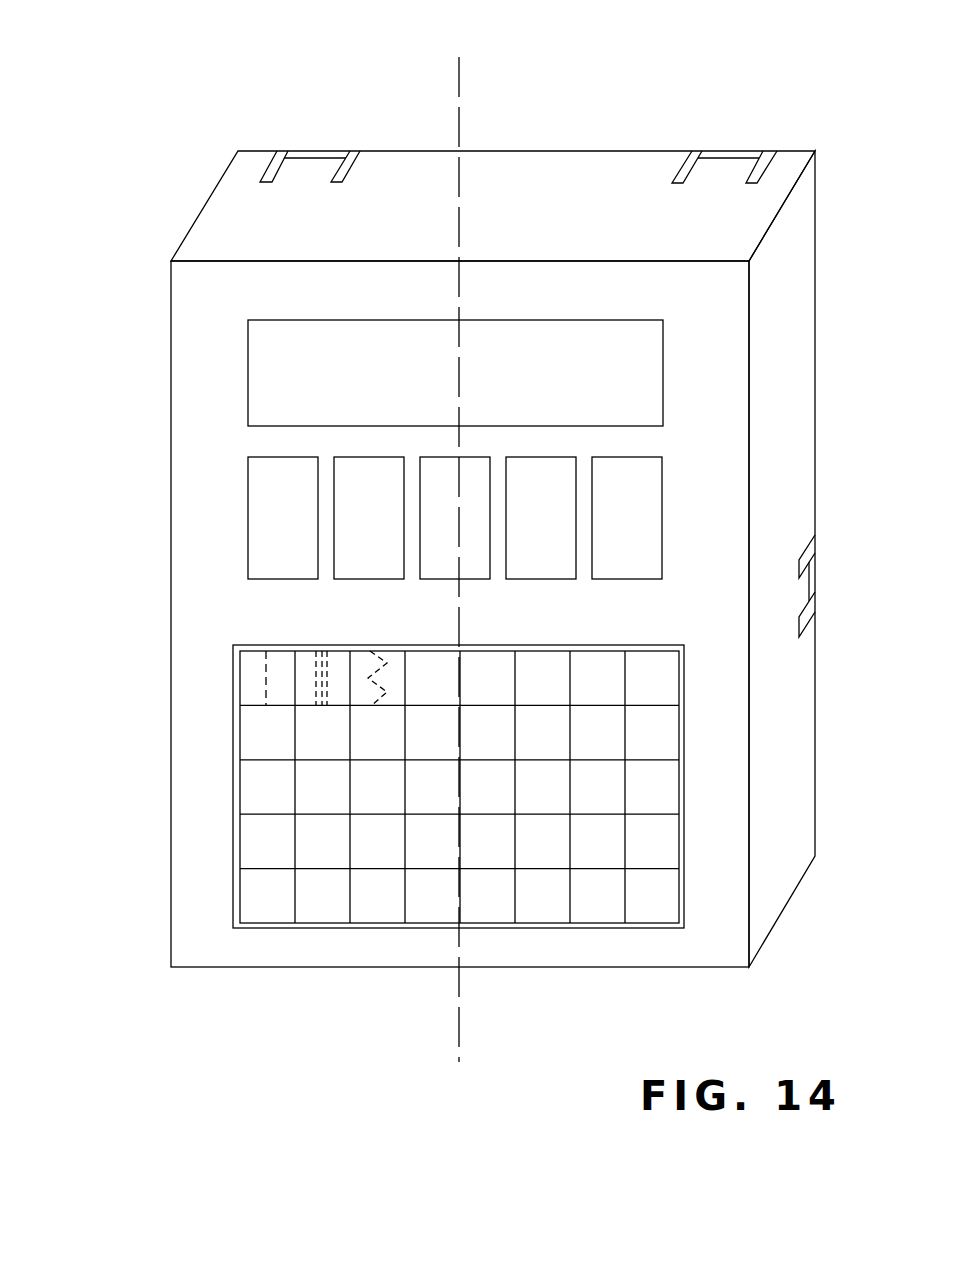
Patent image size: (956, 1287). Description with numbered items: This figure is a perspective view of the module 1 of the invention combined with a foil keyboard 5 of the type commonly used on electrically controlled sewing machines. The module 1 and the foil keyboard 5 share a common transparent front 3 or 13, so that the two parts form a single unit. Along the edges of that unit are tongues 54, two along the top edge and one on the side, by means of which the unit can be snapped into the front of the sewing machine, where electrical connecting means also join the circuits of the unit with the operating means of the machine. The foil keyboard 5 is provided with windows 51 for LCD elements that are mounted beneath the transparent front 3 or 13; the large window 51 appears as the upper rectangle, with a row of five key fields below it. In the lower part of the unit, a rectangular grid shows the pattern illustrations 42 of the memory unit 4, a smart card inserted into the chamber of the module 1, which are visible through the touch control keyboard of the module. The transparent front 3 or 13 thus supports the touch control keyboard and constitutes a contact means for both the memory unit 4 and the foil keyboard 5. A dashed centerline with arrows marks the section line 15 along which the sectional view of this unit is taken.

The module 1 is at (438, 547).
The transparent front 3 is at (405, 614).
The transparent front 13 is at (180, 512).
The memory unit 4 is at (386, 848).
The foil keyboard 5 is at (580, 112).
The section line 15- 15 is at (470, 68).
The pattern illustrations 42 is at (240, 697).
The windows 51 is at (648, 352).
The tongues 54 is at (317, 165).